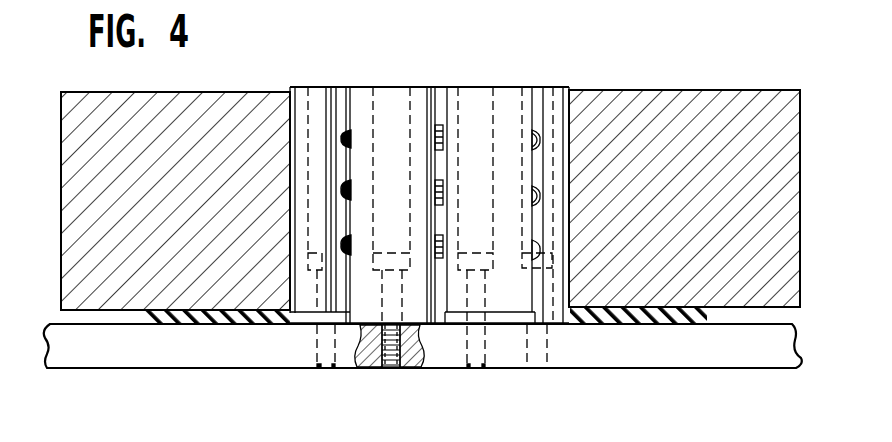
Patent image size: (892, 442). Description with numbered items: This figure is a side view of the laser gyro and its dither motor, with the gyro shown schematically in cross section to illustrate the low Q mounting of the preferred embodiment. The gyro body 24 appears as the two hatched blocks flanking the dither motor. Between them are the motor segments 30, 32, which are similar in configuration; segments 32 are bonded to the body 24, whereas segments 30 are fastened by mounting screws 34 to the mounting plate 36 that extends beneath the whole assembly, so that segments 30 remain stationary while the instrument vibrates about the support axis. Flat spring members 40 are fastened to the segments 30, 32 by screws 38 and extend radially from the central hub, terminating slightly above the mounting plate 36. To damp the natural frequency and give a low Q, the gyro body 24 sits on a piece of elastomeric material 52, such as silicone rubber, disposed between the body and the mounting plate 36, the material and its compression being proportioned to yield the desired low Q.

The body 24 is at (155, 100).
The segments 30 is at (420, 88).
The segments 32 is at (296, 88).
The mounting screws 34 is at (390, 253).
The mounting plate 36 is at (610, 348).
The screws 38 is at (348, 130).
The flat spring members 40 is at (333, 87).
The elastomeric material 52 is at (202, 325).